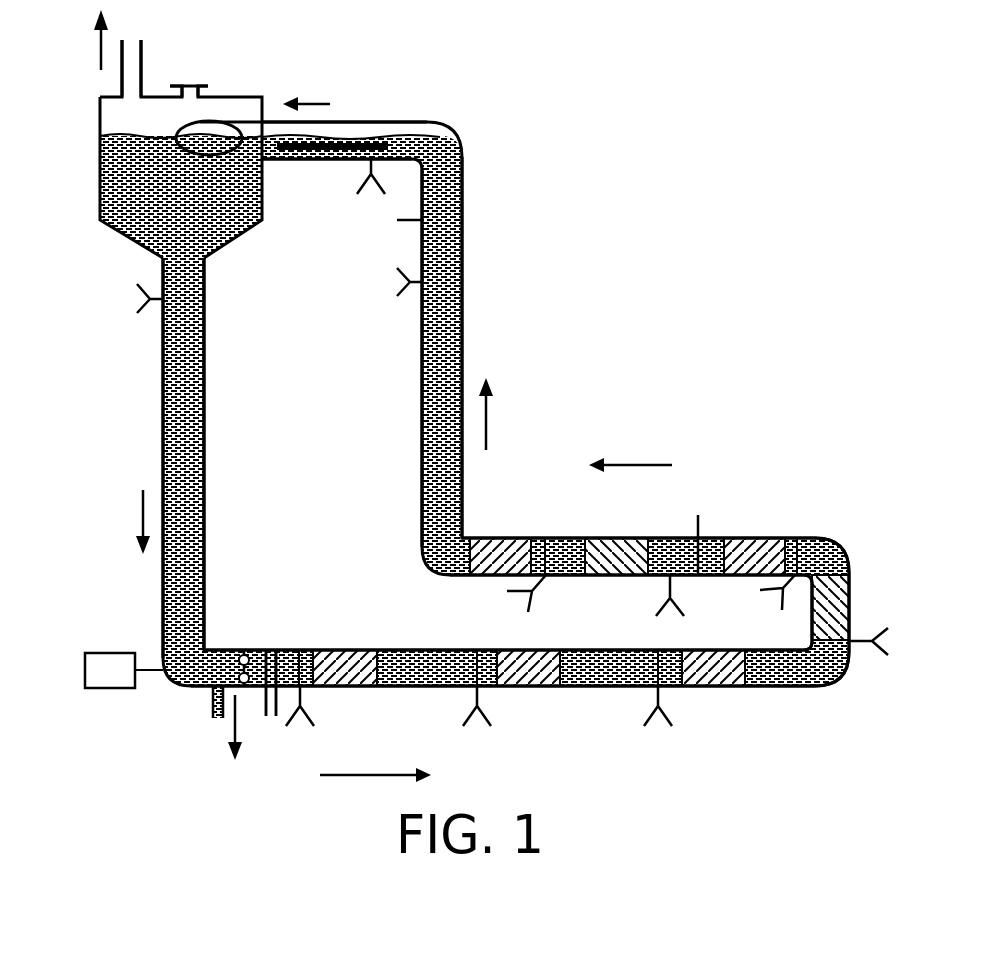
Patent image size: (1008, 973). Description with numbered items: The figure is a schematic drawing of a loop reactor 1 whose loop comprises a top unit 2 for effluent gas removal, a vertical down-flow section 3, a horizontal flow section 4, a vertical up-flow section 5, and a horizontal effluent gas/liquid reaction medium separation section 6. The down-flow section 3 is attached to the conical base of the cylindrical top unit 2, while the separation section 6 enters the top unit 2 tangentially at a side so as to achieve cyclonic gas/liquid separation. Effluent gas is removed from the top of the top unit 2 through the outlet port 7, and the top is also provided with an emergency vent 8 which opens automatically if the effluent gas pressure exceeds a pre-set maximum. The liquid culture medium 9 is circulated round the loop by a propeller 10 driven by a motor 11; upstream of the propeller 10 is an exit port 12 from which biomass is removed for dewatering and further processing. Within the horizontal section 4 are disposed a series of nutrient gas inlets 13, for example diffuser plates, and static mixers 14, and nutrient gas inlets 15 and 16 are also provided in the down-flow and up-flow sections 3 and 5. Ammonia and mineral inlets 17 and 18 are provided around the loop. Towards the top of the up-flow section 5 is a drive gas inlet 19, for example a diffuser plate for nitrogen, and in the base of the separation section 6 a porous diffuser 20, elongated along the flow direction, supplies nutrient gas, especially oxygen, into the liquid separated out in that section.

The loop reactor 1 is at (517, 369).
The top unit 2 is at (98, 132).
The vertical down-flow section 3 is at (161, 418).
The horizontal flow section 4 is at (847, 546).
The vertical up-flow section 5 is at (462, 313).
The horizontal effluent gas/liquid reaction medium separation section 6 is at (388, 122).
The outlet port 7 is at (142, 45).
The emergency vent 8 is at (196, 84).
The liquid culture medium 9 is at (100, 203).
The propeller 10 is at (244, 650).
The motor 11 is at (110, 653).
The exit port 12 is at (215, 716).
The nutrient gas inlets 13 is at (306, 706).
The static mixers 14 is at (366, 650).
The nutrient gas inlet 15 is at (144, 304).
The nutrient gas inlet 16 is at (404, 292).
The ammonia and mineral inlet 17 is at (266, 718).
The ammonia and mineral inlet 18 is at (280, 650).
The drive gas inlet 19 is at (396, 222).
The porous diffuser 20 is at (366, 176).